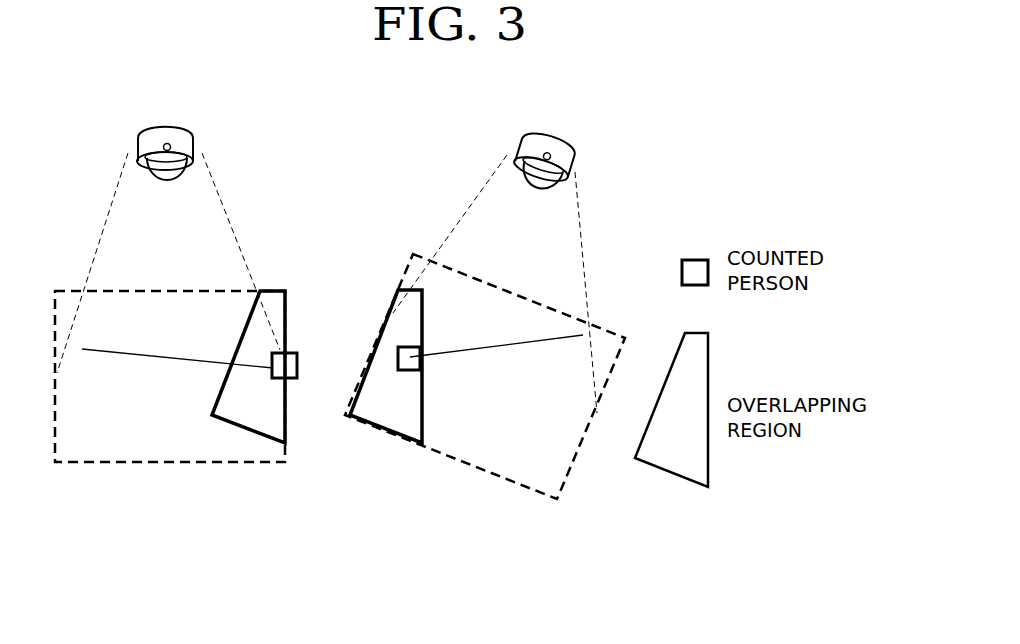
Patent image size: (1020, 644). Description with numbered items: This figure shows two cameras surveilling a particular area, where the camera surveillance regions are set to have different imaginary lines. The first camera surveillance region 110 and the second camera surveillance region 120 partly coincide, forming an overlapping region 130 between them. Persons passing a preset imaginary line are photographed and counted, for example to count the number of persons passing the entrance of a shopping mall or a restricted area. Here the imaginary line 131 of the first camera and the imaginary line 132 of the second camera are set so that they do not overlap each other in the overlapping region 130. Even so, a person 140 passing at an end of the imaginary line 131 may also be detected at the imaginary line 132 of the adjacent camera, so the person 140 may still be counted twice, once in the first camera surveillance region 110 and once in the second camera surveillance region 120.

The first camera surveillance region 110 is at (88, 462).
The second camera surveillance region 120 is at (535, 488).
The overlapping region 130 is at (240, 430).
The imaginary line 131 is at (152, 357).
The imaginary line 132 is at (490, 350).
The person 140 is at (288, 380).